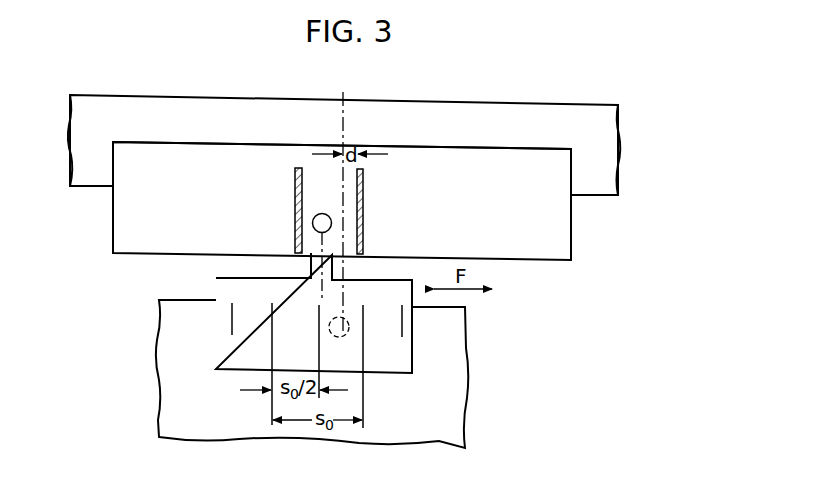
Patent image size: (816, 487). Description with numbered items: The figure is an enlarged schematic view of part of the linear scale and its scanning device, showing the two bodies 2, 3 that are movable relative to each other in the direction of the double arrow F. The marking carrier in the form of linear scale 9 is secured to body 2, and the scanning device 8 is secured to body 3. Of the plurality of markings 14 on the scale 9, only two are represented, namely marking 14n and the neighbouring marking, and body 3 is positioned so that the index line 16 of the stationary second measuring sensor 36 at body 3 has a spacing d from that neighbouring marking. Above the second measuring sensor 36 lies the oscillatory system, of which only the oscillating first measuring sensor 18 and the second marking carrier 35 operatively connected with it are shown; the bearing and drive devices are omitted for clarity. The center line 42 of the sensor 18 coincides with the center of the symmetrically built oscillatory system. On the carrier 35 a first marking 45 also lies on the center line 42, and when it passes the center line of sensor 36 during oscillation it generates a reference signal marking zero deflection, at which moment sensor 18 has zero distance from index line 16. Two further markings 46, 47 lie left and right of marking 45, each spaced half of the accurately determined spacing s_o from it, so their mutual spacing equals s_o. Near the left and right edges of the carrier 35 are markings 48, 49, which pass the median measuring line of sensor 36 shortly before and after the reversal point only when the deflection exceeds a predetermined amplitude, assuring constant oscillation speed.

The body 2 is at (561, 104).
The body 3 is at (447, 400).
The scanning device 8 is at (216, 271).
The linear scale 9 is at (534, 208).
The markings 14 is at (339, 211).
The marking 14n is at (295, 187).
The index line 16 is at (343, 118).
The first measuring sensor 18 is at (331, 222).
The second marking carrier 35 is at (224, 313).
The second measuring sensor 36 is at (349, 327).
The center line 42 is at (322, 265).
The first marking 45 is at (308, 351).
The marking 46 is at (276, 353).
The marking 47 is at (369, 354).
The marking 48 is at (235, 332).
The marking 49 is at (402, 334).